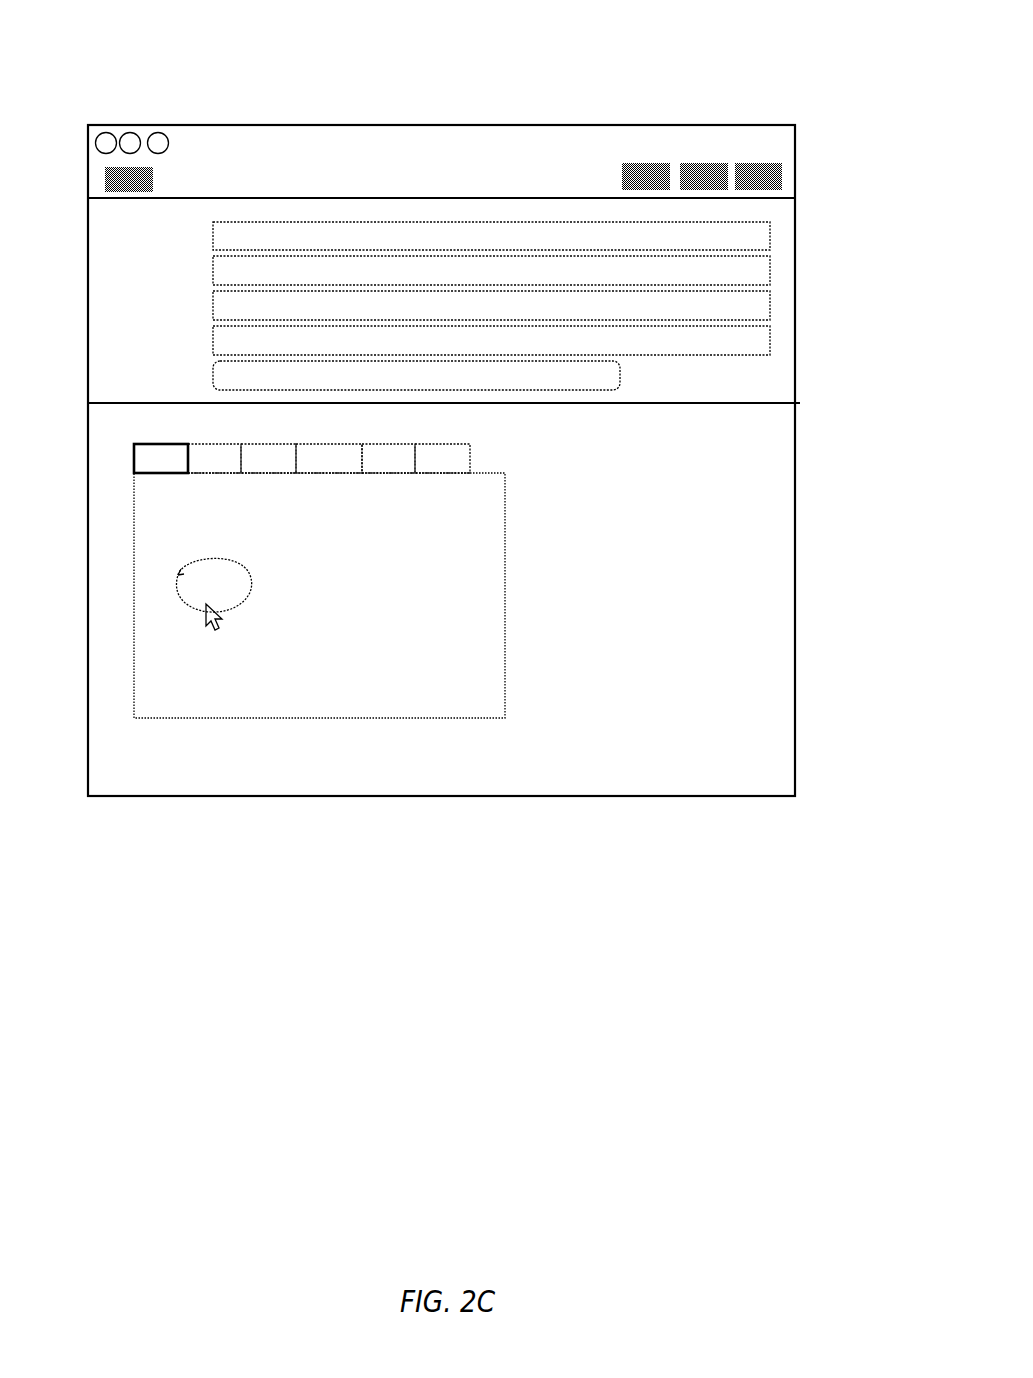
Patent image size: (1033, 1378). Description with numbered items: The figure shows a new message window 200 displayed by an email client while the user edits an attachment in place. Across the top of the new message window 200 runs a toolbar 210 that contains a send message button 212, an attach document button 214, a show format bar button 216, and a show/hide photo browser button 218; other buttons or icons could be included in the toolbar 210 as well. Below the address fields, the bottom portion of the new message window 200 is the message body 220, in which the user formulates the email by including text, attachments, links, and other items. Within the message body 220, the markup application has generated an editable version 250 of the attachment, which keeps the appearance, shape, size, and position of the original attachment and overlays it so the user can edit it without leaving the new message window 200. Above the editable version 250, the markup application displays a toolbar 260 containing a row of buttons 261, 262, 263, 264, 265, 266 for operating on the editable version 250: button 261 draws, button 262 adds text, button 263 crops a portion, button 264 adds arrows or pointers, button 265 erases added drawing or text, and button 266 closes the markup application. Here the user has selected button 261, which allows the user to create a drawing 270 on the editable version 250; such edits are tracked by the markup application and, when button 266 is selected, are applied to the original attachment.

The new message window 200 is at (782, 36).
The toolbar 210 is at (358, 163).
The send message button 212 is at (101, 171).
The attach document button 214 is at (643, 152).
The show format bar button 216 is at (710, 152).
The show/hide photo browser button 218 is at (763, 152).
The message body 220 is at (760, 493).
The editable version of the attachment 250 is at (145, 596).
The toolbar 260 is at (334, 441).
The button 261 is at (148, 441).
The button 262 is at (212, 441).
The button 263 is at (275, 441).
The button 264 is at (336, 441).
The button 265 is at (395, 441).
The button 266 is at (448, 441).
The drawing 270 is at (178, 611).